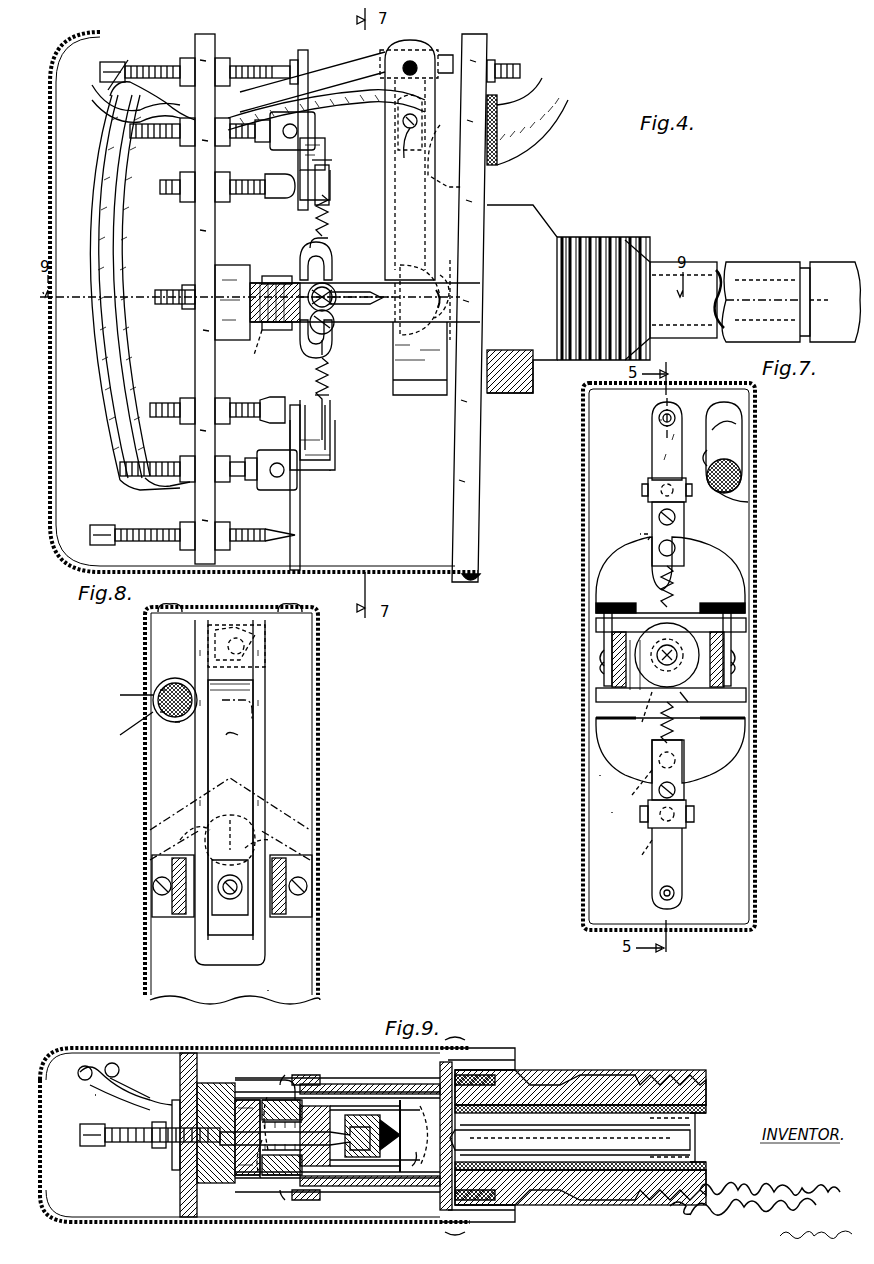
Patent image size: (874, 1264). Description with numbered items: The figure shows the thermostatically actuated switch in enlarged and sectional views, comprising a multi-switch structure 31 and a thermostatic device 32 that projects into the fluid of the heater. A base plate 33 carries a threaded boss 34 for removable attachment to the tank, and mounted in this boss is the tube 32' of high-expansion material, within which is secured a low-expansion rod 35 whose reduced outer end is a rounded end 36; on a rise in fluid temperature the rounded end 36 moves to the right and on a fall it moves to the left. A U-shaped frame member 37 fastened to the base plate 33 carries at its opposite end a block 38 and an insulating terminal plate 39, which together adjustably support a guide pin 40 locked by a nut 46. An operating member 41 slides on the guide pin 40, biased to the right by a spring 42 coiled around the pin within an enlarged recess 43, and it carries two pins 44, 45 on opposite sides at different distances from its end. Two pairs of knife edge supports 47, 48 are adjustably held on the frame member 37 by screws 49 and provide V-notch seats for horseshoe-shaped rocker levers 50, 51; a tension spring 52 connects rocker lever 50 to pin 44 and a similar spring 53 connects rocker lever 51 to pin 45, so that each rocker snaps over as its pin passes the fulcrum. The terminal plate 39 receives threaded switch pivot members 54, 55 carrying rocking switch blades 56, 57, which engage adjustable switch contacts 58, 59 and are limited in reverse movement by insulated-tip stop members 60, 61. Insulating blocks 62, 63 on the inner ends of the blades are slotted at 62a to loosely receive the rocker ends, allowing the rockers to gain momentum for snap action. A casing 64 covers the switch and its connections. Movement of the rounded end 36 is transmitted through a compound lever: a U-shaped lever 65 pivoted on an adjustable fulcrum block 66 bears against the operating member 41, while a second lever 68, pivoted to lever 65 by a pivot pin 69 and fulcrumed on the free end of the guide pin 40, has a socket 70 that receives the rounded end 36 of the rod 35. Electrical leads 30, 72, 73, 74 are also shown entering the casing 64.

In FIG. 4, the conductor cable 30 is at (398, 112).
In FIG. 7, the conductor cable 30 is at (742, 444).
In FIG. 8, the conductor cable 30 is at (172, 678).
In FIG. 4, the multi-switch structure 31 is at (350, 484).
In FIG. 7, the multi-switch structure 31 is at (606, 784).
In FIG. 9, the multi-switch structure 31 is at (262, 1090).
In FIG. 4, the thermostatic device 32 is at (761, 330).
In FIG. 4, the tube 32' is at (788, 285).
In FIG. 9, the tube 32' is at (678, 1114).
In FIG. 4, the base plate 33 is at (478, 500).
In FIG. 8, the base plate 33 is at (275, 1005).
In FIG. 9, the base plate 33 is at (468, 1060).
In FIG. 4, the threaded boss 34 is at (610, 240).
In FIG. 8, the threaded boss 34 is at (305, 820).
In FIG. 9, the threaded boss 34 is at (585, 1075).
In FIG. 4, the rod 35 is at (695, 310).
In FIG. 8, the rod 35 is at (230, 838).
In FIG. 9, the rod 35 is at (570, 1140).
In FIG. 4, the rounded end 36 is at (419, 300).
In FIG. 8, the rounded end 36 is at (182, 830).
In FIG. 9, the rounded end 36 is at (427, 1127).
In FIG. 4, the frame member 37 is at (378, 330).
In FIG. 7, the frame member 37 is at (724, 645).
In FIG. 8, the frame member 37 is at (152, 870).
In FIG. 9, the frame member 37 is at (345, 1080).
In FIG. 4, the block 38 is at (235, 265).
In FIG. 7, the block 38 is at (596, 690).
In FIG. 9, the block 38 is at (215, 1083).
In FIG. 4, the terminal plate 39 is at (215, 372).
In FIG. 7, the terminal plate 39 is at (610, 812).
In FIG. 9, the terminal plate 39 is at (180, 1195).
In FIG. 4, the guide pin 40 is at (347, 282).
In FIG. 7, the guide pin 40 is at (655, 645).
In FIG. 8, the guide pin 40 is at (225, 895).
In FIG. 9, the guide pin 40 is at (320, 1136).
In FIG. 4, the operating member 41 is at (285, 275).
In FIG. 7, the operating member 41 is at (645, 709).
In FIG. 9, the operating member 41 is at (272, 1175).
In FIG. 4, the spring 42 is at (265, 350).
In FIG. 9, the spring 42 is at (270, 1098).
In FIG. 9, the recess 43 is at (268, 1175).
In FIG. 4, the pin 44 is at (305, 255).
In FIG. 4, the pin 45 is at (332, 350).
In FIG. 7, the pin 45 is at (689, 707).
In FIG. 4, the nut 46 is at (188, 280).
In FIG. 9, the nut 46 is at (175, 1160).
In FIG. 4, the knife edge supports 47 is at (332, 260).
In FIG. 7, the knife edge supports 47 is at (596, 622).
In FIG. 4, the knife edge supports 48 is at (325, 360).
In FIG. 7, the knife edge supports 48 is at (604, 700).
In FIG. 9, the knife edge supports 48 is at (300, 1075).
In FIG. 4, the screws 49 is at (268, 276).
In FIG. 7, the screws 49 is at (600, 660).
In FIG. 9, the screws 49 is at (285, 1075).
In FIG. 4, the rocker lever 50 is at (329, 192).
In FIG. 7, the rocker lever 50 is at (720, 570).
In FIG. 4, the rocker lever 51 is at (330, 395).
In FIG. 7, the rocker lever 51 is at (700, 765).
In FIG. 4, the spring 52 is at (330, 235).
In FIG. 7, the spring 52 is at (656, 586).
In FIG. 4, the spring 53 is at (328, 400).
In FIG. 7, the spring 53 is at (656, 722).
In FIG. 4, the switch pivot member 54 is at (265, 150).
In FIG. 7, the switch pivot member 54 is at (650, 478).
In FIG. 4, the switch pivot member 55 is at (262, 490).
In FIG. 7, the switch pivot member 55 is at (634, 857).
In FIG. 4, the switch blade 56 is at (340, 75).
In FIG. 7, the switch blade 56 is at (652, 445).
In FIG. 4, the switch blade 57 is at (300, 512).
In FIG. 7, the switch blade 57 is at (682, 865).
In FIG. 4, the switch contact 58 is at (280, 198).
In FIG. 7, the switch contact 58 is at (630, 533).
In FIG. 4, the switch contact 59 is at (270, 400).
In FIG. 7, the switch contact 59 is at (636, 790).
In FIG. 4, the stop member 60 is at (282, 60).
In FIG. 7, the stop member 60 is at (658, 418).
In FIG. 4, the stop member 61 is at (272, 528).
In FIG. 7, the stop member 61 is at (658, 893).
In FIG. 4, the block 62 is at (325, 160).
In FIG. 7, the block 62 is at (684, 528).
In FIG. 4, the slot 62a is at (330, 180).
In FIG. 4, the block 63 is at (335, 460).
In FIG. 7, the block 63 is at (684, 785).
In FIG. 4, the casing 64 is at (265, 306).
In FIG. 7, the casing 64 is at (583, 555).
In FIG. 8, the casing 64 is at (270, 587).
In FIG. 9, the casing 64 is at (100, 1048).
In FIG. 4, the U-shaped lever 65 is at (420, 395).
In FIG. 8, the U-shaped lever 65 is at (195, 743).
In FIG. 9, the U-shaped lever 65 is at (400, 1100).
In FIG. 4, the fulcrum block 66 is at (380, 52).
In FIG. 8, the fulcrum block 66 is at (225, 625).
In FIG. 4, the second lever 68 is at (492, 259).
In FIG. 8, the second lever 68 is at (245, 733).
In FIG. 4, the pivot pin 69 is at (410, 160).
In FIG. 8, the pivot pin 69 is at (253, 708).
In FIG. 4, the socket 70 is at (429, 303).
In FIG. 9, the socket 70 is at (423, 1163).
In FIG. 4, the lead wire 72 is at (147, 80).
In FIG. 7, the lead wire 72 is at (696, 451).
In FIG. 8, the lead wire 72 is at (165, 690).
In FIG. 4, the lead wire 73 is at (108, 410).
In FIG. 7, the lead wire 73 is at (748, 502).
In FIG. 8, the lead wire 73 is at (168, 710).
In FIG. 9, the lead wire 73 is at (91, 1104).
In FIG. 4, the lead wire 74 is at (130, 254).
In FIG. 7, the lead wire 74 is at (741, 480).
In FIG. 8, the lead wire 74 is at (180, 720).
In FIG. 9, the lead wire 74 is at (125, 1080).